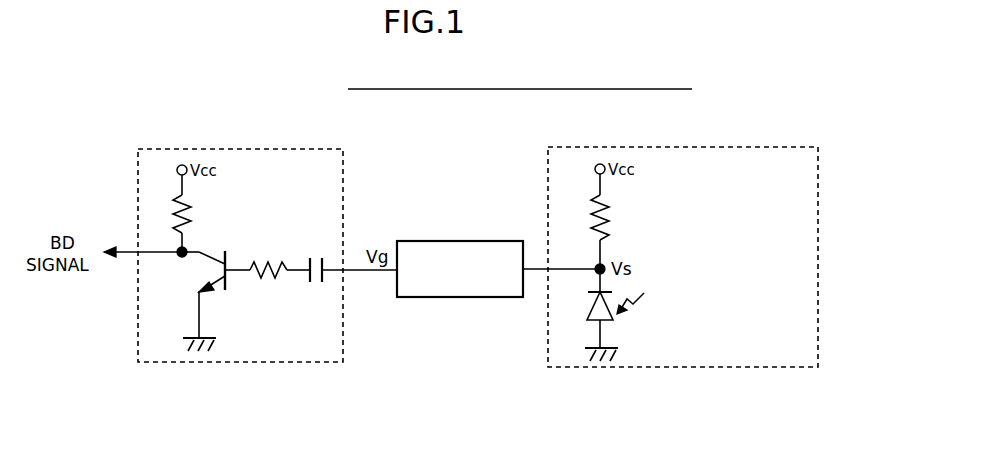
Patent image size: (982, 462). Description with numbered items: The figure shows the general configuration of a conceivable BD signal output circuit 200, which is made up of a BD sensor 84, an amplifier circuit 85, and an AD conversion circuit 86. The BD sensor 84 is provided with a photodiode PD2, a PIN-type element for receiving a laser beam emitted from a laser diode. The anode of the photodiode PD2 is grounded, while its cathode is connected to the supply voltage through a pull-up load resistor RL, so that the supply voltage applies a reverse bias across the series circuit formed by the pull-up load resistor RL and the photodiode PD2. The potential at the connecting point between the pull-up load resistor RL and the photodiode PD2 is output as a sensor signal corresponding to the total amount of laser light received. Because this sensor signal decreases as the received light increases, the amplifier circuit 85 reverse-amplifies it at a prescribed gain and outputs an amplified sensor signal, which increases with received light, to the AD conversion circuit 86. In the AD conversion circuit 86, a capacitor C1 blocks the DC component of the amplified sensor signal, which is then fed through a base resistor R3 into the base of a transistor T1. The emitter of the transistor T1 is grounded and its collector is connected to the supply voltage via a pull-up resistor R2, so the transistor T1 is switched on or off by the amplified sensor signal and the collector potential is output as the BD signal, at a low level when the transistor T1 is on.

The BD signal output circuit 200 is at (639, 121).
The AD conversion circuit 86 is at (197, 146).
The BD sensor 84 is at (745, 146).
The amplifier circuit 85 is at (481, 241).
The pull-up resistor R2 is at (196, 213).
The base resistor R3 is at (261, 283).
The transistor T1 is at (228, 258).
The capacitor C1 is at (315, 255).
The pull-up load resistor RL is at (613, 219).
The photodiode PD2 is at (613, 320).